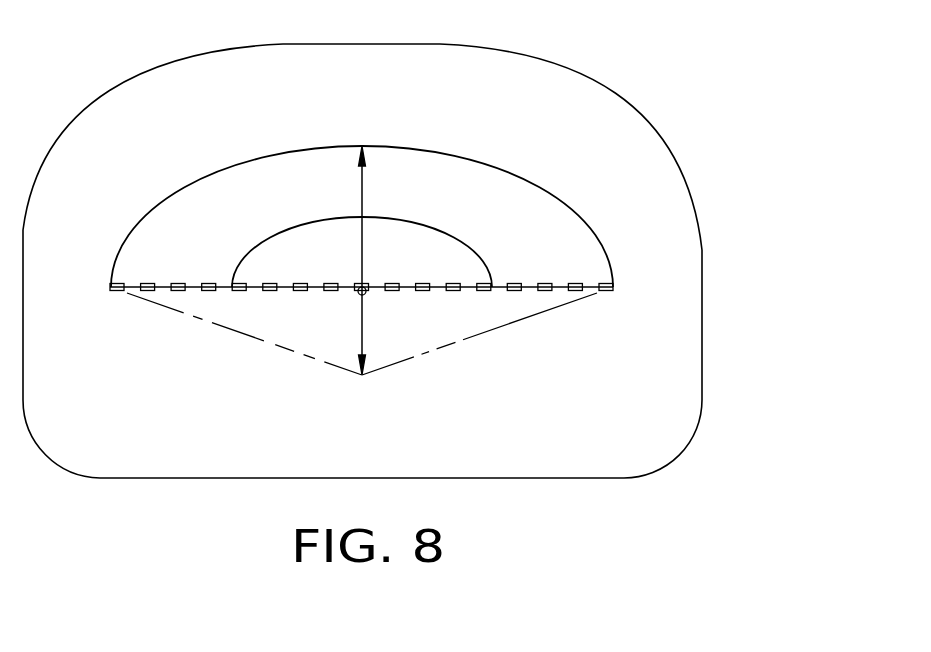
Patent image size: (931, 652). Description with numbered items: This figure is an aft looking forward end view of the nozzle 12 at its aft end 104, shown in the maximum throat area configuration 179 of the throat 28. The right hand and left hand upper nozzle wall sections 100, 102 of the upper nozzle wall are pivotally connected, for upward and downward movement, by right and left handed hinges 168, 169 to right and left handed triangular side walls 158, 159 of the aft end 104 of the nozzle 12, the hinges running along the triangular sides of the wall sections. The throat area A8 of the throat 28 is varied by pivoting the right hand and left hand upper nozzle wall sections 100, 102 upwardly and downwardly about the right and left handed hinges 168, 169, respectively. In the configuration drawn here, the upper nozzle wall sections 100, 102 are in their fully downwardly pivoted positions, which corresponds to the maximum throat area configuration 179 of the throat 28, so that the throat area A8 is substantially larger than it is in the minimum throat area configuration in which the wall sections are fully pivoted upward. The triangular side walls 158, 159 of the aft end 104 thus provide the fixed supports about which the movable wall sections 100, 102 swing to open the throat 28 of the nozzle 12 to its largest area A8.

The nozzle 12 is at (389, 243).
The aft end 104 is at (660, 208).
The throat 28 is at (364, 193).
The maximum throat area configuration 179 is at (385, 308).
The right handed hinge 168 is at (160, 283).
The left handed hinge 169 is at (562, 285).
The right hand upper nozzle wall section 100 is at (262, 340).
The left hand upper nozzle wall section 102 is at (483, 332).
The right handed triangular side wall 158 is at (148, 363).
The left handed triangular side wall 159 is at (535, 357).
The throat area A8 is at (260, 319).